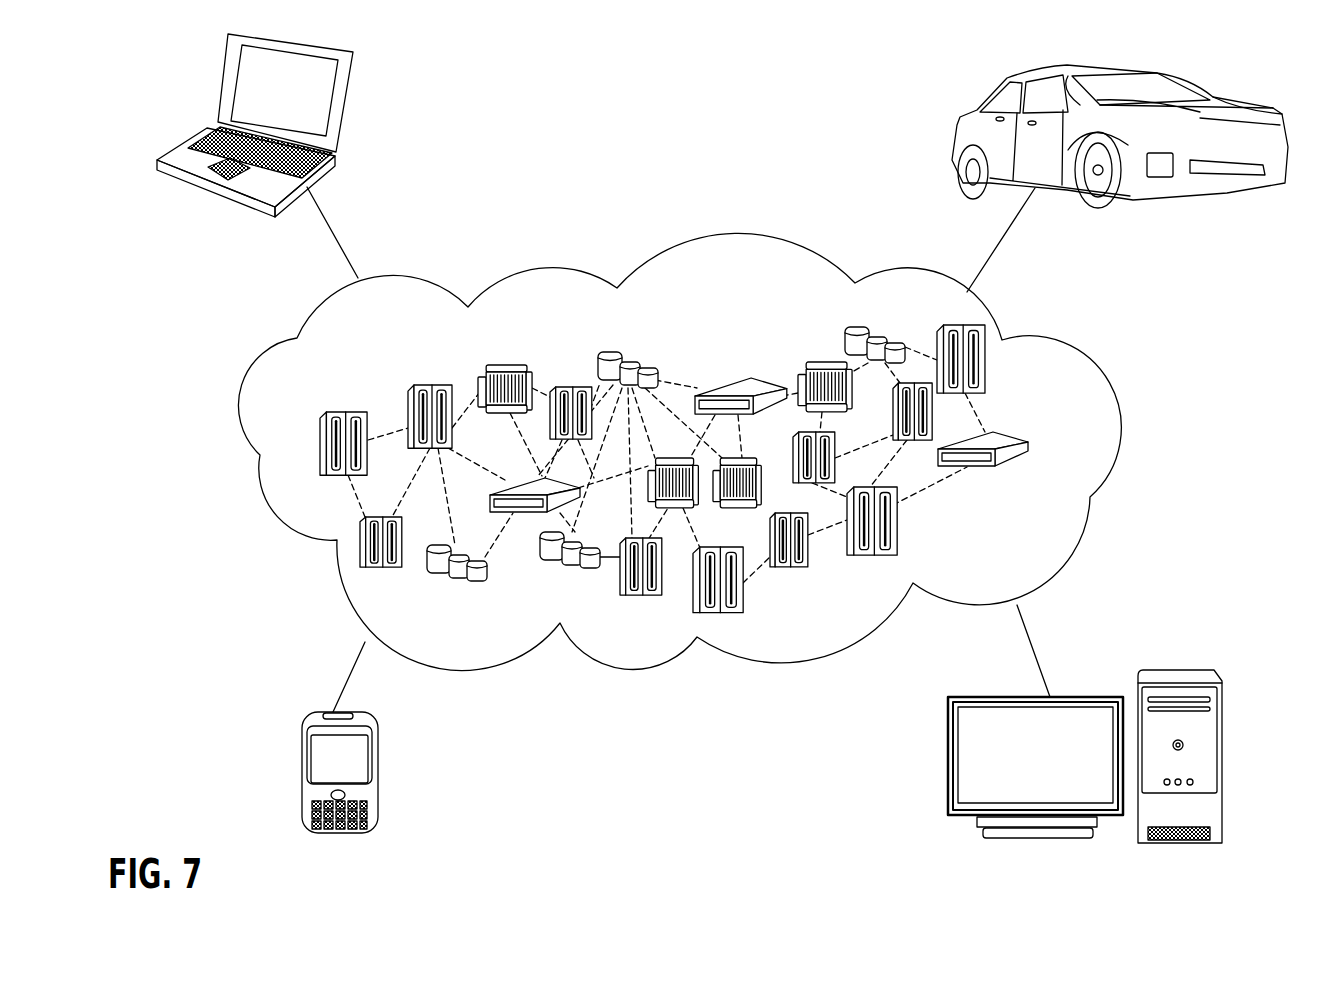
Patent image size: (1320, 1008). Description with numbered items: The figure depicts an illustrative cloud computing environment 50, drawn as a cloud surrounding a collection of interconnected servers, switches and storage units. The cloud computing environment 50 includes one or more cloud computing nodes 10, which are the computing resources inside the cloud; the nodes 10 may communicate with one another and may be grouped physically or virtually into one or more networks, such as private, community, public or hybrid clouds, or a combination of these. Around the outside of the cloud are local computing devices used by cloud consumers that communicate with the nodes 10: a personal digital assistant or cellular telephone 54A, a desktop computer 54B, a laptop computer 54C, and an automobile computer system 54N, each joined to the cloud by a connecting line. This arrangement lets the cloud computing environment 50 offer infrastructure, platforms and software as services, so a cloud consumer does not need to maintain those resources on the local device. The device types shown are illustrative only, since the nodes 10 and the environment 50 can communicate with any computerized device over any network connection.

The cloud computing node 10 is at (1085, 447).
The cloud computing environment 50 is at (1097, 353).
The personal digital assistant (PDA) or cellular telephone 54A is at (300, 777).
The desktop computer 54B is at (1183, 668).
The laptop computer 54C is at (350, 107).
The automobile computer system 54N is at (962, 115).